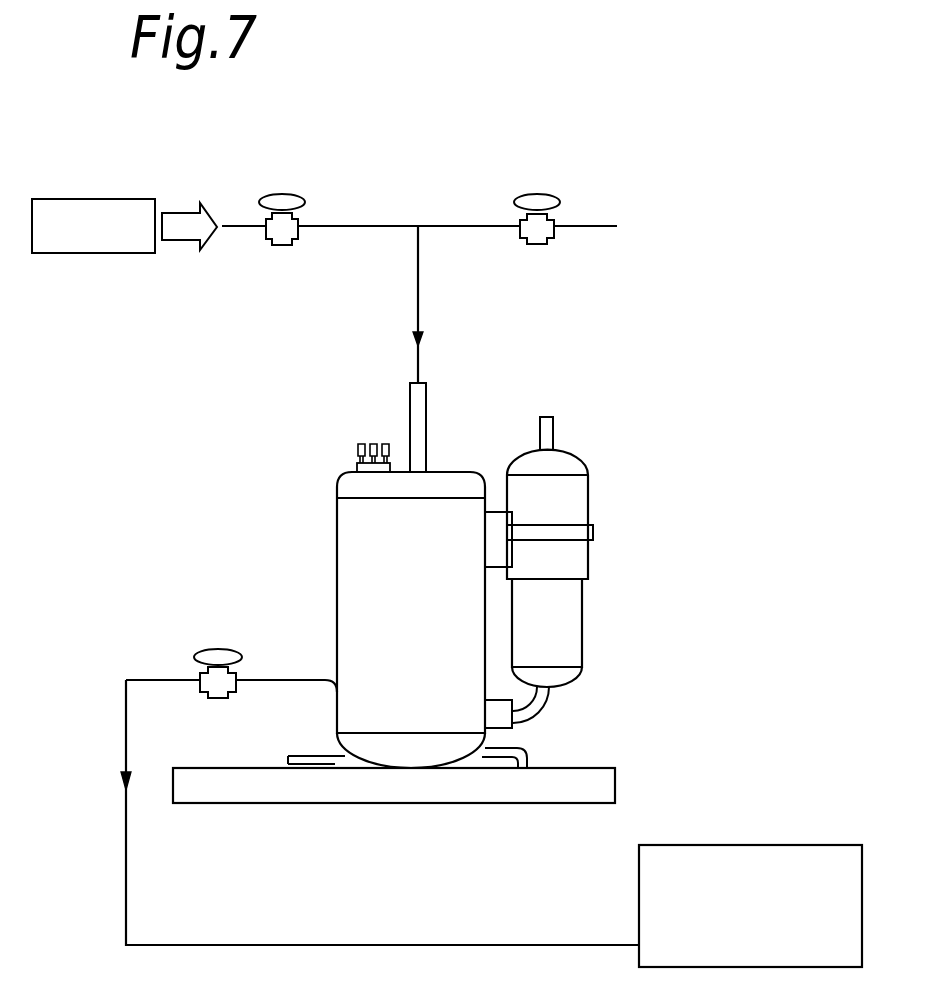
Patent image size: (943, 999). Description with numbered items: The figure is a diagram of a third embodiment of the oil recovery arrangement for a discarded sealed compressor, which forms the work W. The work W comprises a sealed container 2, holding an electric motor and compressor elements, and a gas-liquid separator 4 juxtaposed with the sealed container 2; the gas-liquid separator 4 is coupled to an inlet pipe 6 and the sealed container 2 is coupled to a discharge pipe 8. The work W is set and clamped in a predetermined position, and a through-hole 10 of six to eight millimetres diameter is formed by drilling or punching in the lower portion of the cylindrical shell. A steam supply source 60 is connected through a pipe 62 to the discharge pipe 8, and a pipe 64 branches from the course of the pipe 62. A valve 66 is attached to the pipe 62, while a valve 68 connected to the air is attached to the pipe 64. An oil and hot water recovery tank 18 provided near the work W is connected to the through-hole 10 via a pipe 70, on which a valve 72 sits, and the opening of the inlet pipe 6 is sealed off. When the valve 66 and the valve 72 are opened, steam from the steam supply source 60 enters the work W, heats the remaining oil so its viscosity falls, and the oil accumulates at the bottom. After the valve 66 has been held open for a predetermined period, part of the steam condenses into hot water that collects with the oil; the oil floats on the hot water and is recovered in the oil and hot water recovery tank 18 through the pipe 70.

The steam supply source 60 is at (82, 199).
The pipe 62 is at (396, 226).
The pipe 64 is at (468, 226).
The valve 66 is at (290, 196).
The valve 68 is at (536, 244).
The discharge pipe 8 is at (426, 405).
The sealed container 2 is at (337, 618).
The gas-liquid separator 4 is at (568, 626).
The work W is at (602, 500).
The inlet pipe 6 is at (553, 430).
The through-hole 10 is at (333, 690).
The valve 72 is at (207, 650).
The pipe 70 is at (239, 945).
The oil and hot water recovery tank 18 is at (690, 845).